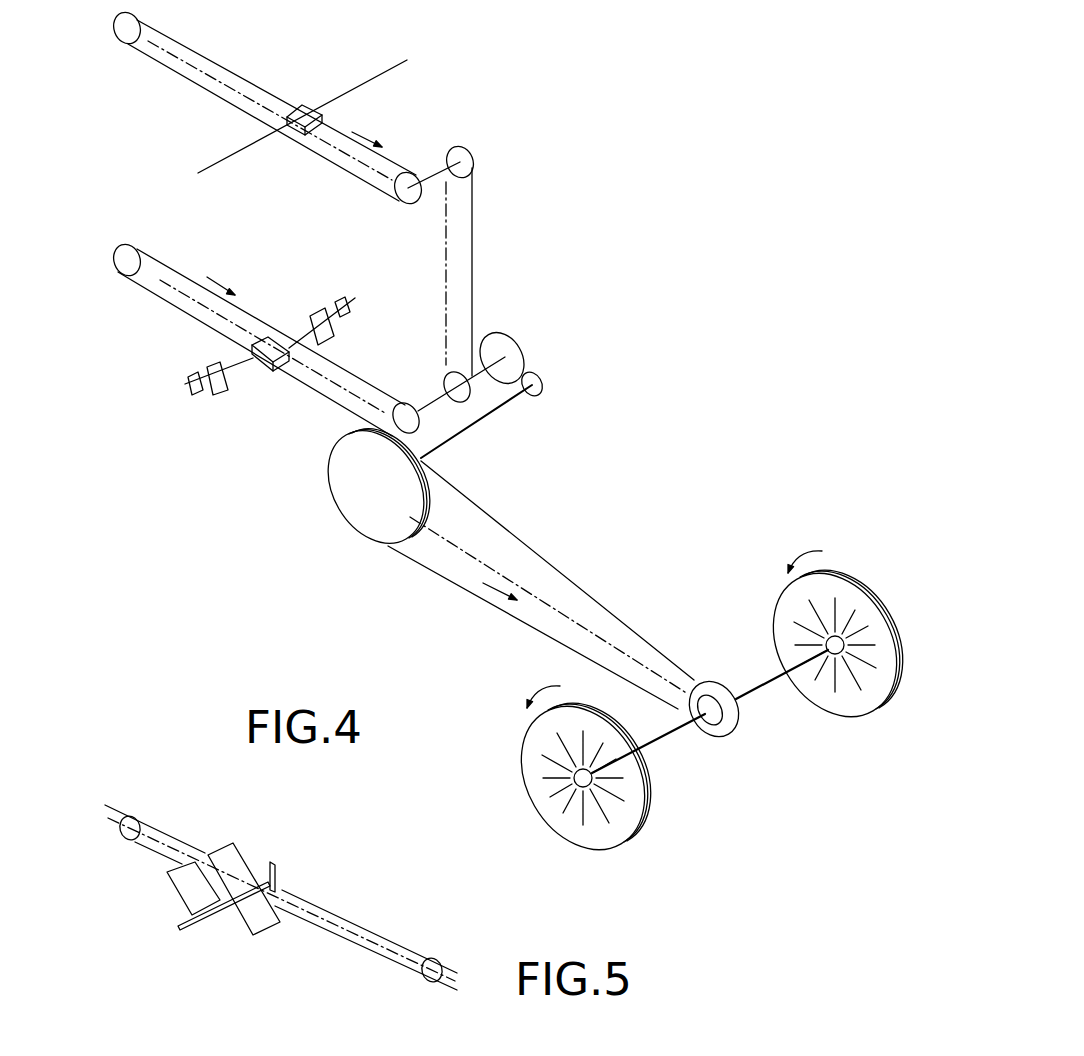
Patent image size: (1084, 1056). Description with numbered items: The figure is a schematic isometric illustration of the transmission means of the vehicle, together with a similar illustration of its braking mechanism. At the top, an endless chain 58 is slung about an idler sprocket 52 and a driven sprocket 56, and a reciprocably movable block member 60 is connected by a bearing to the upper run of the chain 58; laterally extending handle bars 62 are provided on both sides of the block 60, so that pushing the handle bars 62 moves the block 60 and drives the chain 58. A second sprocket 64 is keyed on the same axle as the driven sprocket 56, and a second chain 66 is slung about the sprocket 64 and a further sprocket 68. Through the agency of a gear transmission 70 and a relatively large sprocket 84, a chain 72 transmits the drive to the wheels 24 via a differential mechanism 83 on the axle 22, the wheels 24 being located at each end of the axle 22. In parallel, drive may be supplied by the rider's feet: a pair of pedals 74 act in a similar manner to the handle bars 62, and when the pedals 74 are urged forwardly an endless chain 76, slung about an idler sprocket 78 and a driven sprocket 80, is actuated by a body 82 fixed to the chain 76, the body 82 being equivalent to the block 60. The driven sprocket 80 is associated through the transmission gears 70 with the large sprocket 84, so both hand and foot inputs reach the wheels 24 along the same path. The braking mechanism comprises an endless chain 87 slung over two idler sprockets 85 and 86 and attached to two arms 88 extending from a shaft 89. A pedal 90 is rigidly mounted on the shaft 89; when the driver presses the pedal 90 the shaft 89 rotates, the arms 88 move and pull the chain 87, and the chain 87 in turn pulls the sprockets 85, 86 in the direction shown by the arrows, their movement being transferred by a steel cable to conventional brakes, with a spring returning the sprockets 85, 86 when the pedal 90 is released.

In FIG. 4, the axle 22 is at (665, 738).
In FIG. 4, the wheels 24 is at (595, 843).
In FIG. 4, the idler sprocket 52 is at (113, 22).
In FIG. 4, the driven sprocket 56 is at (413, 197).
In FIG. 4, the endless chain 58 is at (302, 145).
In FIG. 4, the block member 60 is at (302, 110).
In FIG. 4, the handle bars 62 is at (398, 64).
In FIG. 4, the second sprocket 64 is at (465, 157).
In FIG. 4, the second chain 66 is at (475, 237).
In FIG. 4, the sprocket 68 is at (445, 382).
In FIG. 4, the gear transmission 70 is at (527, 357).
In FIG. 4, the chain 72 is at (573, 583).
In FIG. 4, the pedals 74 is at (325, 335).
In FIG. 4, the endless chain 76 is at (244, 312).
In FIG. 4, the idler sprocket 78 is at (123, 253).
In FIG. 4, the driven sprocket 80 is at (423, 418).
In FIG. 4, the body 82 is at (272, 364).
In FIG. 4, the differential mechanism 83 is at (717, 686).
In FIG. 4, the large sprocket 84 is at (332, 498).
In FIG. 5, the idler sprocket 85 is at (440, 960).
In FIG. 5, the idler sprocket 86 is at (132, 818).
In FIG. 5, the endless chain 87 is at (342, 900).
In FIG. 5, the arms 88 is at (273, 890).
In FIG. 5, the shaft 89 is at (180, 927).
In FIG. 4, the pedal 90 is at (343, 302).
In FIG. 5, the pedal 90 is at (185, 888).